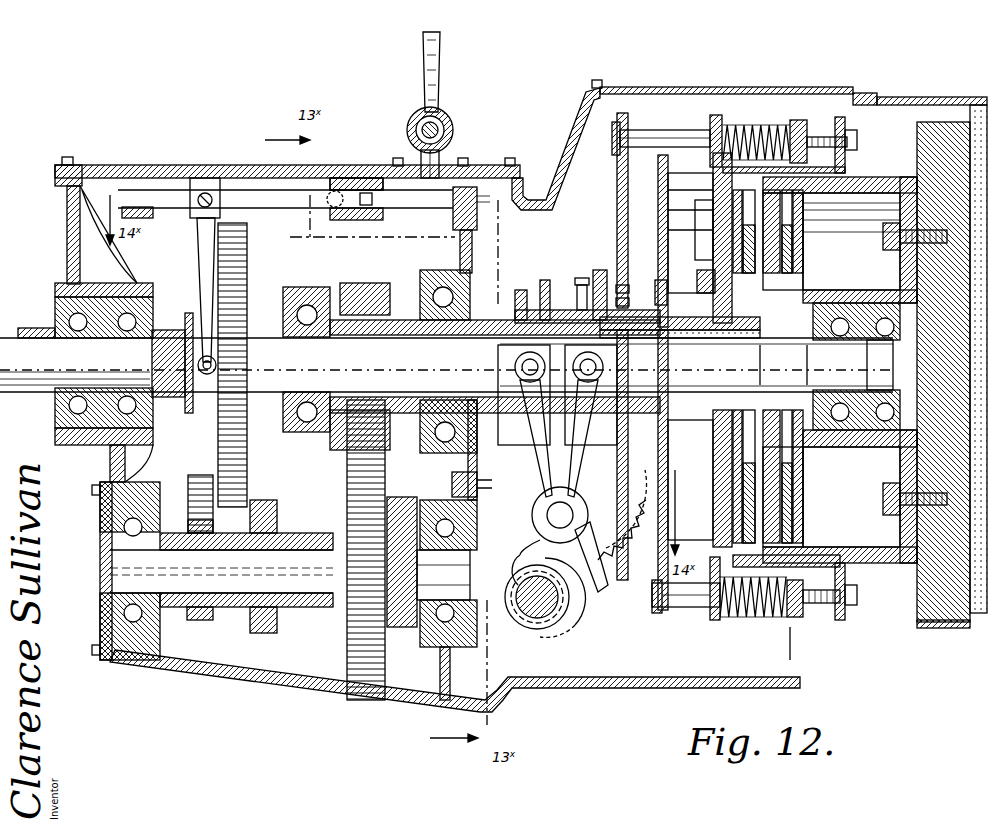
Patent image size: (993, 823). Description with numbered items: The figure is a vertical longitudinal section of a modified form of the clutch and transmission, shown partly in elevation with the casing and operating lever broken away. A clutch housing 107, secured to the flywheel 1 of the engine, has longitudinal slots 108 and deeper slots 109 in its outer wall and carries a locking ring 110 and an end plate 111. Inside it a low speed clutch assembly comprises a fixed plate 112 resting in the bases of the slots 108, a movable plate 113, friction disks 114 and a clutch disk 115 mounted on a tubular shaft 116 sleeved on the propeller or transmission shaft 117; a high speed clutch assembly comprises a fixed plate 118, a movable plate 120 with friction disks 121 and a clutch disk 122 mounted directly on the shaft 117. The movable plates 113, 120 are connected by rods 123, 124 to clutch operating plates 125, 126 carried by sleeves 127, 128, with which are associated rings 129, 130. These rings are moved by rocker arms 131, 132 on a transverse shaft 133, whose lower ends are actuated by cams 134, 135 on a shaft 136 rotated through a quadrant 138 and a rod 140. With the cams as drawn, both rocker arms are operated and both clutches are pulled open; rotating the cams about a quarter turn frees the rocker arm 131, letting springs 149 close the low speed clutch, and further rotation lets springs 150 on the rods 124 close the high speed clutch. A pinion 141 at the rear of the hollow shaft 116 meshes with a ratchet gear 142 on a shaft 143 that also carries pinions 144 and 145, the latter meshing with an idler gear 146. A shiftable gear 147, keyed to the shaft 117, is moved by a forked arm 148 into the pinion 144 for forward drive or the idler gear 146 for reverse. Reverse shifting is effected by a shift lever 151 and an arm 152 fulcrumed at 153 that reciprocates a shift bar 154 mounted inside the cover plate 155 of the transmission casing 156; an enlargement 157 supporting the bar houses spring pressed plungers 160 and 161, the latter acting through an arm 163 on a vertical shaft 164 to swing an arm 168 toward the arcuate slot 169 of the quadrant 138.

The flywheel 1 is at (920, 605).
The clutch housing 107 is at (872, 195).
The longitudinal slots 108 is at (700, 175).
The longitudinal slots 109 is at (740, 575).
The locking ring 110 is at (710, 125).
The end plate 111 is at (740, 117).
The fixed plate 112 is at (750, 617).
The movable plate 113 is at (713, 215).
The friction disks 114 is at (733, 198).
The clutch disk 115 is at (740, 280).
The tubular shaft 116 is at (418, 440).
The propeller or transmission shaft 117 is at (275, 345).
The fixed plate 118 is at (800, 525).
The movable plate 120 is at (790, 468).
The friction disks 121 is at (795, 488).
The clutch disk 122 is at (800, 508).
The rods 123 is at (668, 130).
The rods 124 is at (672, 607).
The clutch operating plate 125 is at (617, 180).
The clutch operating plate 126 is at (658, 205).
The sleeve 127 is at (578, 285).
The sleeve 128 is at (655, 285).
The ring 129 is at (600, 270).
The ring 130 is at (540, 280).
The rocker arm 131 is at (568, 452).
The rocker arm 132 is at (520, 405).
The transverse shaft 133 is at (532, 522).
The cam 134 is at (605, 588).
The cam 135 is at (572, 628).
The shaft 136 is at (532, 620).
The quadrant 138 is at (520, 565).
The rod 140 is at (815, 370).
The pinion 141 is at (305, 432).
The ratchet gear 142 is at (355, 640).
The shaft 143 is at (140, 566).
The pinion 144 is at (262, 633).
The pinion 145 is at (198, 620).
The idler gear 146 is at (200, 480).
The shiftable gear 147 is at (248, 257).
The forked arm 148 is at (198, 262).
The springs 149 is at (760, 130).
The springs 150 is at (790, 617).
The shift lever 151 is at (440, 78).
The arm 152 is at (453, 142).
The fulcrum 153 is at (440, 124).
The shift bar 154 is at (250, 190).
The cover plate 155 is at (205, 165).
The transmission casing 156 is at (220, 690).
The enlargement 157 is at (300, 220).
The spring pressed plunger 160 is at (335, 190).
The spring pressed plunger 161 is at (366, 193).
The arm 163 is at (440, 212).
The vertical shaft 164 is at (475, 250).
The arm 168 is at (538, 497).
The arcuate slot 169 is at (626, 515).